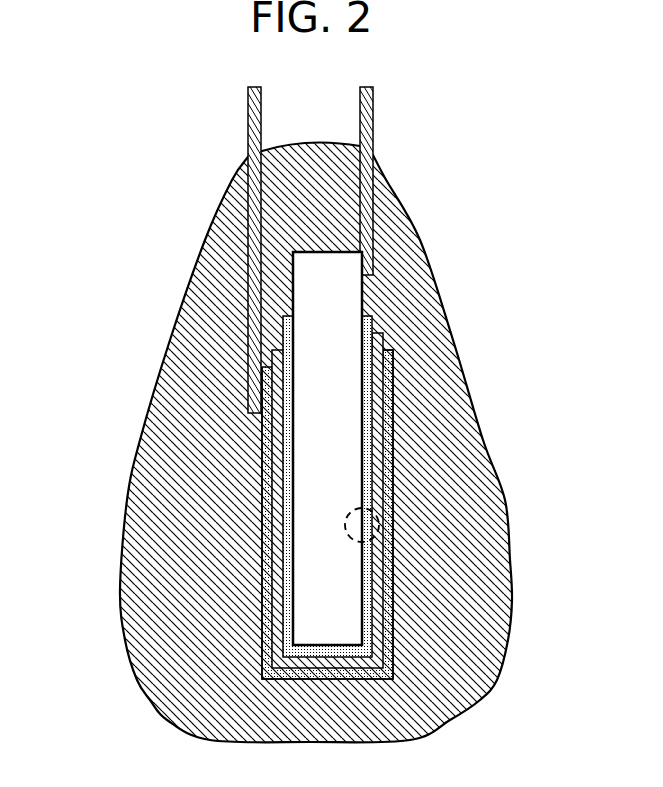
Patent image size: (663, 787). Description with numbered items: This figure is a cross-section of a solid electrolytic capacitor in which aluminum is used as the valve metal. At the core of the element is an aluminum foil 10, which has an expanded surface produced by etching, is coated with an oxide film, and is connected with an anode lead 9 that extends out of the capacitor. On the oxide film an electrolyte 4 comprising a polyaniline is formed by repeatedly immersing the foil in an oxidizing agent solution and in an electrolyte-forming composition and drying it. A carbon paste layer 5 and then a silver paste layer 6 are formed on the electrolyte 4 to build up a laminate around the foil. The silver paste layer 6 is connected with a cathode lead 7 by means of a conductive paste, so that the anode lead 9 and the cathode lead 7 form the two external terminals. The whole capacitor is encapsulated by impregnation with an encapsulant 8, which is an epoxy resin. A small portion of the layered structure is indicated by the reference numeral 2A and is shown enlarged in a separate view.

The enlarged-view portion 2A is at (378, 515).
The electrolyte 4 is at (367, 326).
The carbon paste layer 5 is at (377, 573).
The silver paste layer 6 is at (388, 385).
The cathode lead 7 is at (248, 118).
The encapsulant 8 is at (165, 518).
The anode lead 9 is at (373, 113).
The aluminum foil 10 is at (338, 290).